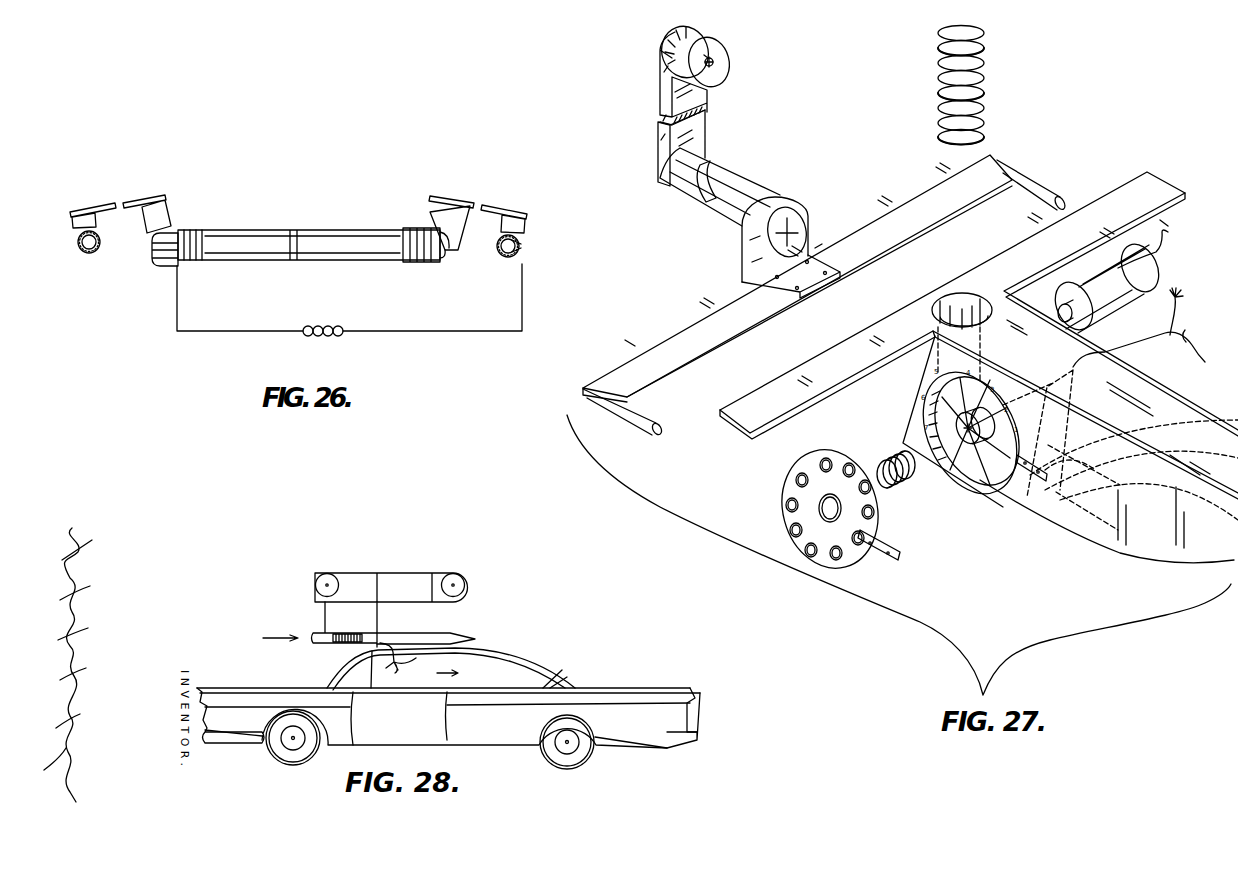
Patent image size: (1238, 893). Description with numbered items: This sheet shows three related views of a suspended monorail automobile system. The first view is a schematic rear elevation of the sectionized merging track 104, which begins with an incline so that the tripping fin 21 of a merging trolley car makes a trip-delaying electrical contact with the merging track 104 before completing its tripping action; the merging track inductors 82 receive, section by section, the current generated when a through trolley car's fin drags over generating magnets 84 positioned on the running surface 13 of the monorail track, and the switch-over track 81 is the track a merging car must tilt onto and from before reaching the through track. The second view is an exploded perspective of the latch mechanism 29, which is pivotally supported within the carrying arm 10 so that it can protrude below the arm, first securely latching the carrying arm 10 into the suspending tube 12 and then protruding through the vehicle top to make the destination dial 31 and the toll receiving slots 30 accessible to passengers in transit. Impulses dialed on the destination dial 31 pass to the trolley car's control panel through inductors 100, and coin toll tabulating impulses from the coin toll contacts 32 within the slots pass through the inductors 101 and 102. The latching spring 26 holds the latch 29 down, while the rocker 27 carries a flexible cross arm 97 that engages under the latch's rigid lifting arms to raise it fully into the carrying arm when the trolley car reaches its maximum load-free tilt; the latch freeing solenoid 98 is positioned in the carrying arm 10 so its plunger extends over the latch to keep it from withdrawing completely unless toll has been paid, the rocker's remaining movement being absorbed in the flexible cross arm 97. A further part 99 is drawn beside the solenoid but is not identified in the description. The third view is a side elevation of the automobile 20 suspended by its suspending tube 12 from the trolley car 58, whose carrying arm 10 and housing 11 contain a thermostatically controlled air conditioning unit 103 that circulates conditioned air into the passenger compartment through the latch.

In FIG. 28, the carrying arm 10 is at (460, 633).
In FIG. 28, the housing 11 is at (357, 614).
In FIG. 28, the suspending tube 12 is at (393, 632).
In FIG. 26, the running surface 13 is at (99, 247).
In FIG. 28, the automobile 20 is at (517, 713).
In FIG. 26, the tripping fin 21 is at (100, 222).
In FIG. 27, the latching spring 26 is at (986, 78).
In FIG. 27, the rocker 27 is at (773, 190).
In FIG. 27, the latch mechanism 29 is at (977, 277).
In FIG. 27, the toll receiving slots 30 is at (1062, 518).
In FIG. 27, the destination dial 31 is at (878, 522).
In FIG. 27, the coin toll contacts 32 is at (1067, 451).
In FIG. 28, the trolley car 58 is at (383, 573).
In FIG. 26, the switch-over track 81 is at (402, 261).
In FIG. 26, the merging track inductors 82 is at (383, 331).
In FIG. 26, the generating magnets 84 is at (521, 242).
In FIG. 27, the flexible cross arm 97 is at (907, 208).
In FIG. 27, the latch freeing solenoid 98 is at (1094, 319).
In FIG. 27, the lead wire 99 is at (1155, 249).
In FIG. 27, the inductors 100 is at (1178, 300).
In FIG. 27, the inductors 101 is at (1186, 342).
In FIG. 27, the inductors 102 is at (1139, 351).
In FIG. 28, the air conditioning unit 103 is at (350, 644).
In FIG. 26, the merging track 104 is at (186, 231).